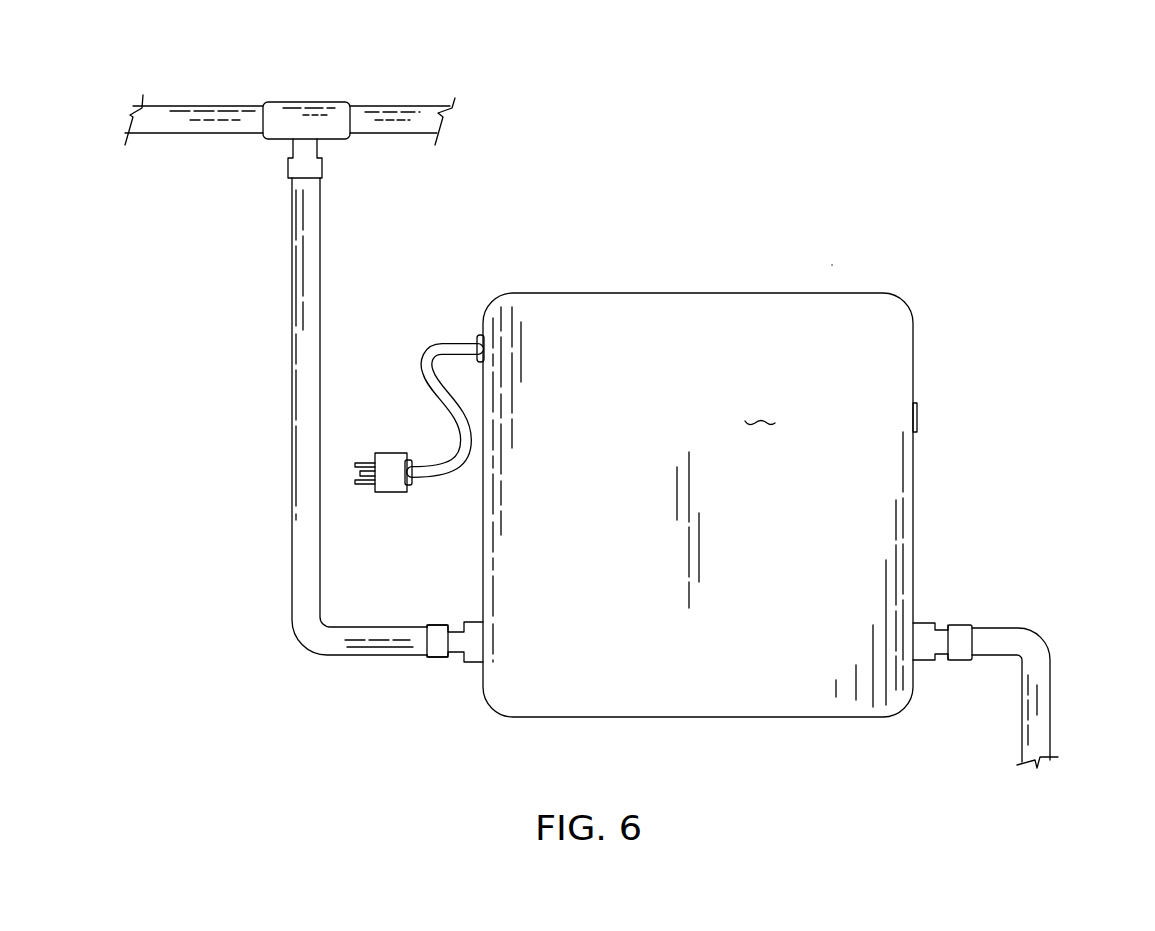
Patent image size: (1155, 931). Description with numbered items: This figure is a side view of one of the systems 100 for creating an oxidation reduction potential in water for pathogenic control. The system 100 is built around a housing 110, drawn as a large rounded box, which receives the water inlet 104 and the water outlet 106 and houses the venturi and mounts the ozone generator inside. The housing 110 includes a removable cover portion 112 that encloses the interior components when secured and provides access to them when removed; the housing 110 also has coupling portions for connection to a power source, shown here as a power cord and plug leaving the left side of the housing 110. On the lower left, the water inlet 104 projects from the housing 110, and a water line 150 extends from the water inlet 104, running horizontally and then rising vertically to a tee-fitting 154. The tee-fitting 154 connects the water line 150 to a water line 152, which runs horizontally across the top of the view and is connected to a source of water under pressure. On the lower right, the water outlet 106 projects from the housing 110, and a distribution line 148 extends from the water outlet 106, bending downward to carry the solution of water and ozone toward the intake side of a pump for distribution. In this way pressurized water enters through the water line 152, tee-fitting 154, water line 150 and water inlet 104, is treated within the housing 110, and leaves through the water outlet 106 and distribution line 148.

The system 100 is at (832, 265).
The housing 110 is at (892, 397).
The removable cover portion 112 is at (761, 410).
The water inlet 104 is at (465, 637).
The water outlet 106 is at (930, 635).
The distribution line 148 is at (1020, 628).
The water line 150 is at (295, 547).
The water line 152 is at (185, 118).
The tee-fitting 154 is at (320, 123).